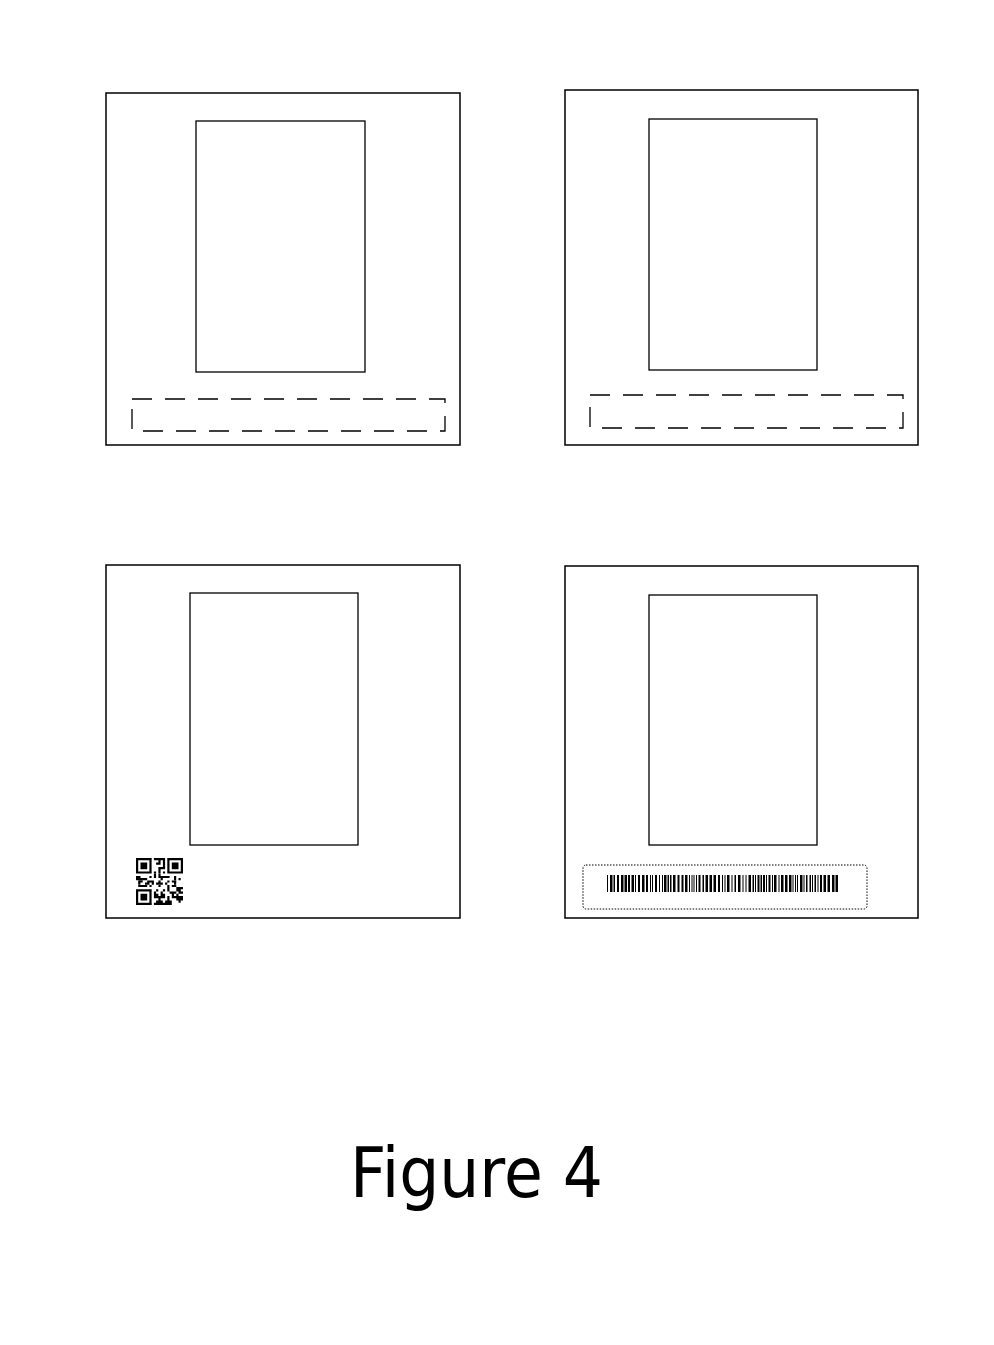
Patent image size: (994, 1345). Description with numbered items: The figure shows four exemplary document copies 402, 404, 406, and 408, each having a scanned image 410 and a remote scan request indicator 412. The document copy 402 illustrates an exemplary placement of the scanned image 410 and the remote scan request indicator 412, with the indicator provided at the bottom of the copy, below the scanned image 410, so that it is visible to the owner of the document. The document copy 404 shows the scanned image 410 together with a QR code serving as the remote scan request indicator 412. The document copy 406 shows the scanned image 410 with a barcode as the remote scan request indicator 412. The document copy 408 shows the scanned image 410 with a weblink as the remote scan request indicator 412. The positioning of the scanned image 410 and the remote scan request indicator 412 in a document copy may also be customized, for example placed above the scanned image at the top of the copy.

The document copy 402 is at (264, 80).
The document copy 404 is at (318, 546).
The document copy 406 is at (776, 546).
The document copy 408 is at (776, 72).
The scanned image 410 is at (196, 192).
The remote scan request indicator 412 is at (132, 420).